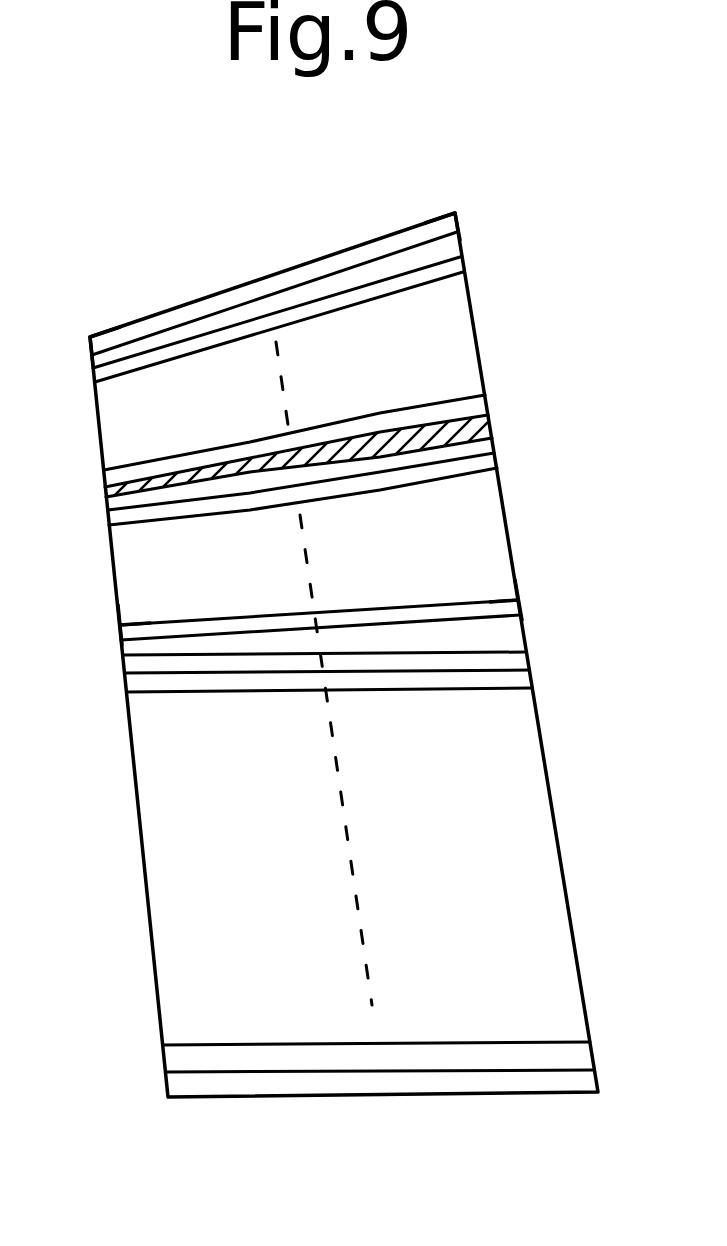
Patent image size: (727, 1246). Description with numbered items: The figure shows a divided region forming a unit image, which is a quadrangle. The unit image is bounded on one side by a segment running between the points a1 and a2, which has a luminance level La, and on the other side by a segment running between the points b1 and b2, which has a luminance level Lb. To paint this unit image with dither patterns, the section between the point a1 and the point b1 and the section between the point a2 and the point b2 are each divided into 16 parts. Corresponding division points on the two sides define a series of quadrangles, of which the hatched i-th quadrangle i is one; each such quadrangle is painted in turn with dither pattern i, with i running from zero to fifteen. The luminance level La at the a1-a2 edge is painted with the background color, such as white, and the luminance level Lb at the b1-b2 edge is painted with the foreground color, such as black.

The parts 16 is at (82, 342).
The i-th quadrangle i is at (372, 440).
The luminance level La is at (135, 333).
The luminance level Lb is at (455, 640).
The point a1 is at (80, 334).
The point a2 is at (455, 205).
The point b1 is at (104, 638).
The point b2 is at (534, 625).